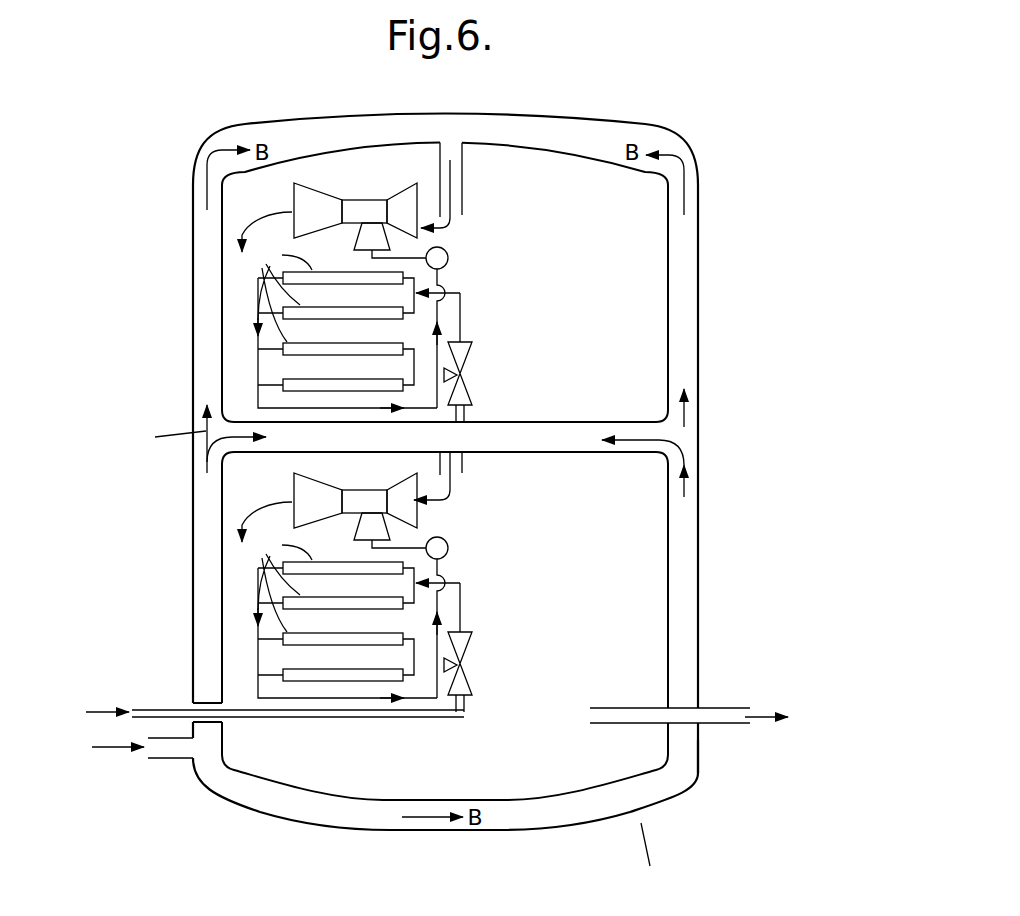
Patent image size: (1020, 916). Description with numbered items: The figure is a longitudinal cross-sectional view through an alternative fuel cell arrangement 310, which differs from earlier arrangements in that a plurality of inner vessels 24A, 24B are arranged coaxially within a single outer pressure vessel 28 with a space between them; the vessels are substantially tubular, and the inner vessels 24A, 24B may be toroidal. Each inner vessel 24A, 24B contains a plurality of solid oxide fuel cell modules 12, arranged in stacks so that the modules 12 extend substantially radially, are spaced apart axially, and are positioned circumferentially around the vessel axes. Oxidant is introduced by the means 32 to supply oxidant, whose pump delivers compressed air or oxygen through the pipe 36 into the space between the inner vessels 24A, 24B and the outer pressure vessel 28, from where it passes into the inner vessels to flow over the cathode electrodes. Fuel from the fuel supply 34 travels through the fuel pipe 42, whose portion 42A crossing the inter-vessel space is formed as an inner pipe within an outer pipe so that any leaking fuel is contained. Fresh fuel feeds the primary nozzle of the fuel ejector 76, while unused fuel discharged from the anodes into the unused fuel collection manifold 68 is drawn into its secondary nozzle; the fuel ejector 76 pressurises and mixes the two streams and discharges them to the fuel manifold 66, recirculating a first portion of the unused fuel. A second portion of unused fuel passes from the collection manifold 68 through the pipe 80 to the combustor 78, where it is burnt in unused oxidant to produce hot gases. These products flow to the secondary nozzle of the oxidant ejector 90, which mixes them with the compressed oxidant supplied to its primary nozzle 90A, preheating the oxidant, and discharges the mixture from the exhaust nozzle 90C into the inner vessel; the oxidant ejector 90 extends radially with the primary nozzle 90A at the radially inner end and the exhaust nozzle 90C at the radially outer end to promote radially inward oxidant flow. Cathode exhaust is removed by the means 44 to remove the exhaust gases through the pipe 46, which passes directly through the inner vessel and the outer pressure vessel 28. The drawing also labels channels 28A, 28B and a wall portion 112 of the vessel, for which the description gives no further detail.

The solid oxide fuel cell module 12 is at (748, 582).
The inner vessel 24A is at (668, 325).
The inner vessel 24B is at (668, 612).
The outer pressure vessel 28 is at (698, 530).
The intermediate flow channel 28A is at (698, 448).
The bottom flow channel 28B is at (637, 858).
The means to supply oxidant 32 is at (120, 750).
The fuel supply 34 is at (108, 709).
The pipe 36 is at (178, 760).
The fuel pipe 42 is at (468, 420).
The portion of the fuel pipe 42A is at (205, 702).
The means to remove the exhaust gases 44 is at (763, 712).
The pipe 46 is at (737, 706).
The fuel manifold 66 is at (413, 318).
The unused fuel collection manifold 68 is at (256, 338).
The fuel ejector 76 is at (472, 375).
The combustor 78 is at (447, 252).
The pipe 80 is at (441, 277).
The oxidant ejector 90 is at (367, 200).
The primary nozzle 90A is at (403, 203).
The exhaust nozzle 90C is at (318, 203).
The bottom wall 112 is at (698, 755).
The fuel cell arrangement 310 is at (716, 287).